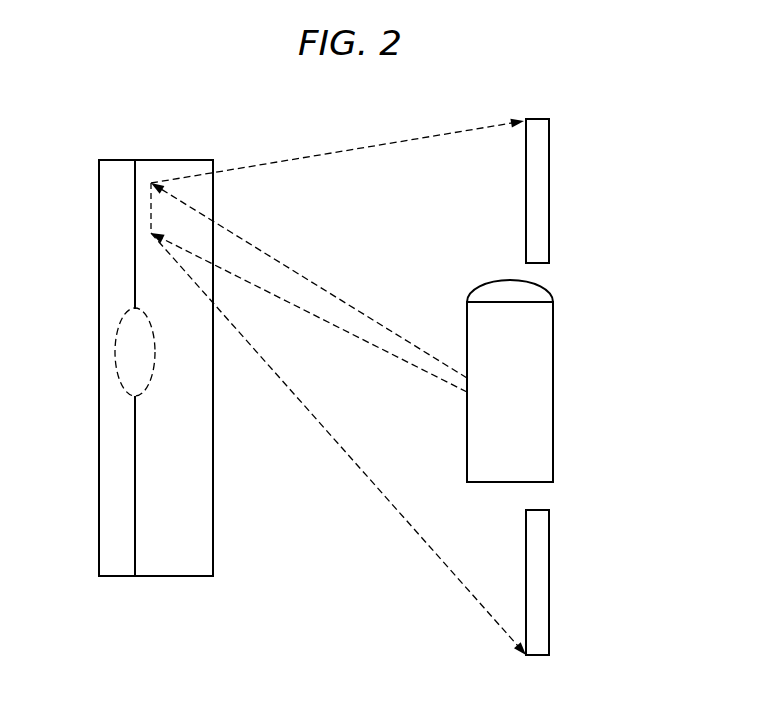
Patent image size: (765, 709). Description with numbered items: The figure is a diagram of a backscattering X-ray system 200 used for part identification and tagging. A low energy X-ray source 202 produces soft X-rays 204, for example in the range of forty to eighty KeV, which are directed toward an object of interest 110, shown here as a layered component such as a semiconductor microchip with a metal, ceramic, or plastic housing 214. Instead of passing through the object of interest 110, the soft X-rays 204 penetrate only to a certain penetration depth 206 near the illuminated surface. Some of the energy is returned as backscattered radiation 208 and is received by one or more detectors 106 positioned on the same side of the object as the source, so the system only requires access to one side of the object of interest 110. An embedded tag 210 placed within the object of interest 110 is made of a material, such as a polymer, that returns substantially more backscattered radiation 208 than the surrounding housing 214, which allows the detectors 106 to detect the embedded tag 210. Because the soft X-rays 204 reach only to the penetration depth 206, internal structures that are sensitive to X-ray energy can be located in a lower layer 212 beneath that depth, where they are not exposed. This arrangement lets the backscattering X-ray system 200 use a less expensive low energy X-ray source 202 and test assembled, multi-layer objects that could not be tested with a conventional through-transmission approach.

The backscattering X-ray system 200 is at (646, 99).
The object of interest 110 is at (213, 590).
The lower layer 212 is at (98, 553).
The housing 214 is at (203, 568).
The embedded tag 210 is at (117, 358).
The penetration depth 206 is at (152, 172).
The backscattered radiation 208 is at (251, 336).
The soft X-rays 204 is at (318, 300).
The low energy X-ray source 202 is at (553, 393).
The detectors 106 is at (550, 180).